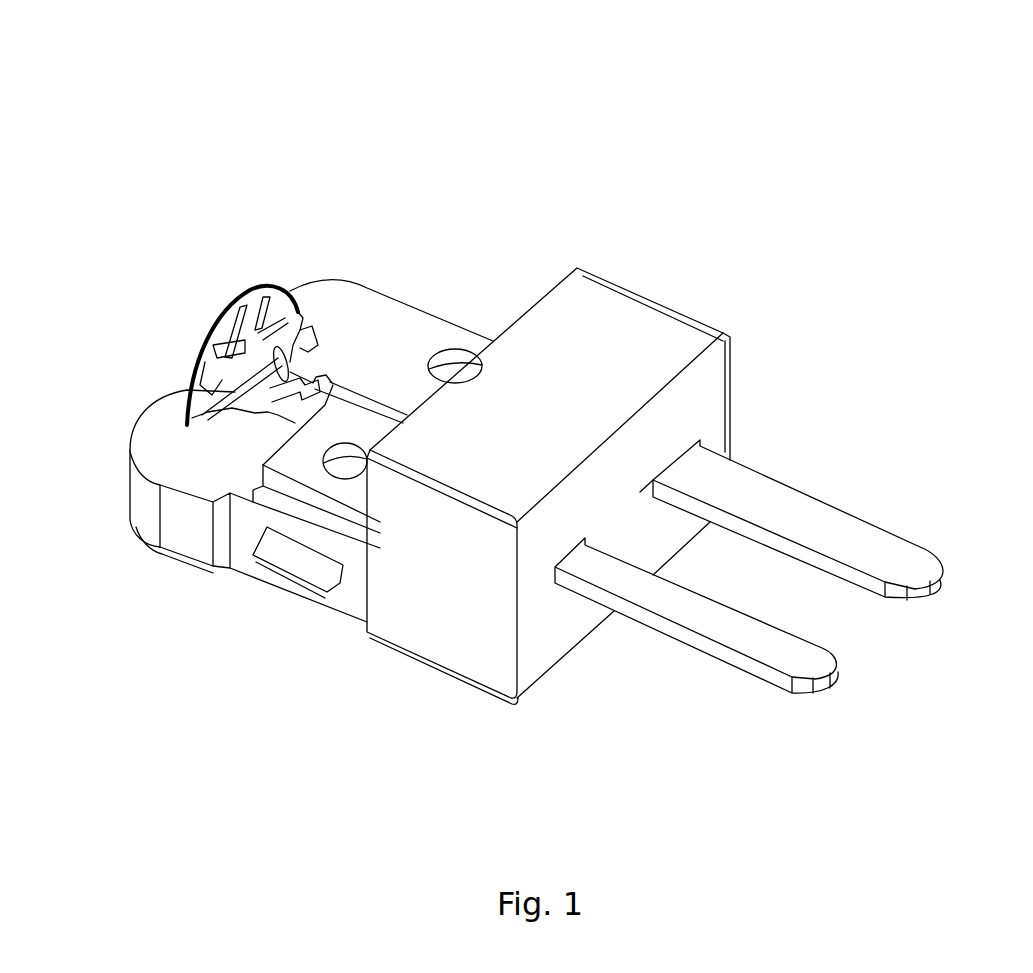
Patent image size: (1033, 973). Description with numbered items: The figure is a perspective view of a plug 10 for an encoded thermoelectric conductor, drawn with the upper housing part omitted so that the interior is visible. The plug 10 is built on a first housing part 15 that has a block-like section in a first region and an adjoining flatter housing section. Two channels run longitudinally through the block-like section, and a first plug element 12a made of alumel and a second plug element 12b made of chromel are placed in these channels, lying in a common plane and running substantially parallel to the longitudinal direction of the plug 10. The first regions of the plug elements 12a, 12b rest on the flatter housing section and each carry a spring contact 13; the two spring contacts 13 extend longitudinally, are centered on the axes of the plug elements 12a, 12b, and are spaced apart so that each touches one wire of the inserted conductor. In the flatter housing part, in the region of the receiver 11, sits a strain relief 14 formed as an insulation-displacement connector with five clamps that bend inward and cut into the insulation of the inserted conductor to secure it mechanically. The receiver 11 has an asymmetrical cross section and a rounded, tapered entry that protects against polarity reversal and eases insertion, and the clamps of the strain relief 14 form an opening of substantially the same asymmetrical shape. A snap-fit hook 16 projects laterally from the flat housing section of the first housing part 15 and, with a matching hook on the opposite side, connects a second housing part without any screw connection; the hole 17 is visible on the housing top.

The plug 10 is at (441, 125).
The receiver 11 is at (178, 341).
The first plug element 12a is at (725, 470).
The second plug element 12b is at (655, 592).
The spring contact 13 is at (323, 361).
The strain relief 14 is at (232, 300).
The first housing part 15 is at (563, 365).
The snap-fit hook 16 is at (293, 552).
The hole 17 is at (448, 370).